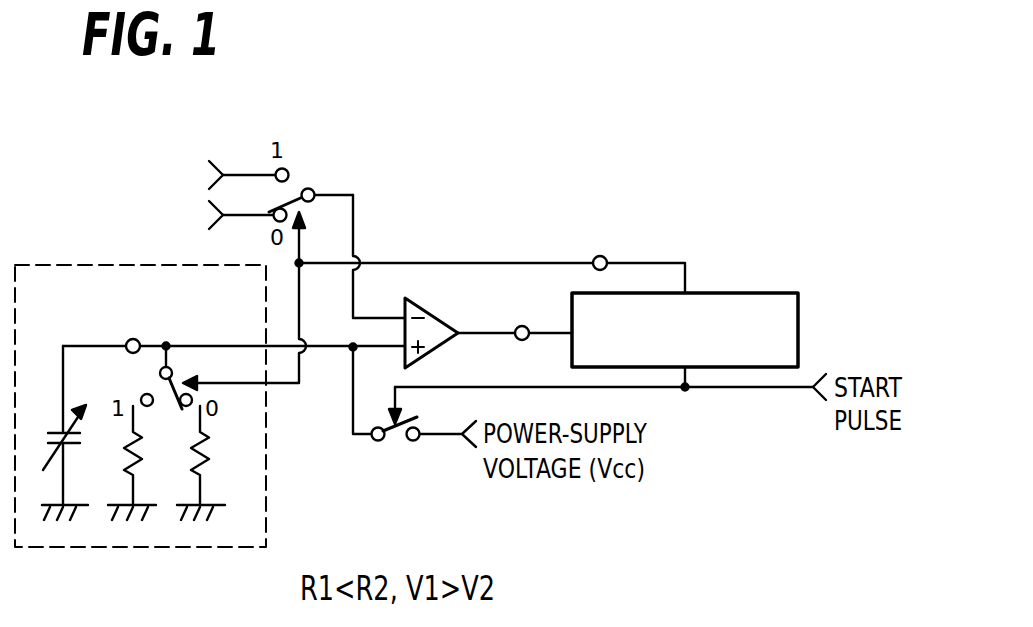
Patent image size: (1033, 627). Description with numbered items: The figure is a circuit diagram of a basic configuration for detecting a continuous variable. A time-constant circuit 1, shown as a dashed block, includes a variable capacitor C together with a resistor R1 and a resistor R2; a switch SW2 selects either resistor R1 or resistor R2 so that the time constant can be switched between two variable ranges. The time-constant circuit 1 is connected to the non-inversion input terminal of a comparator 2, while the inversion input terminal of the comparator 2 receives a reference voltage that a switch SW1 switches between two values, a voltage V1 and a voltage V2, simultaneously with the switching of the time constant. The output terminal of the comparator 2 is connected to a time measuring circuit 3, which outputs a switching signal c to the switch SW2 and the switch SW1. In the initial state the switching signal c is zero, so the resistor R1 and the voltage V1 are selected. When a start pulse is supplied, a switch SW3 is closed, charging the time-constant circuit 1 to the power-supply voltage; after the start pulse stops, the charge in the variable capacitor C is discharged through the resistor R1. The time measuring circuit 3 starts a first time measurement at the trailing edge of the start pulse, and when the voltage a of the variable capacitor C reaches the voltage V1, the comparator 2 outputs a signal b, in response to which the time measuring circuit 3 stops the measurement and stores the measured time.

The time-constant circuit 1 is at (57, 263).
The comparator 2 is at (438, 316).
The time measuring circuit 3 is at (742, 293).
The voltage of the variable capacitor a is at (133, 339).
The signal output from the comparator b is at (526, 326).
The switching signal c is at (603, 256).
The switch SW1 is at (303, 168).
The switch SW2 is at (148, 384).
The switch SW3 is at (398, 456).
The variable capacitor C is at (63, 433).
The resistor R1 is at (212, 463).
The resistor R2 is at (141, 463).
The reference voltage V1 is at (183, 217).
The reference voltage V2 is at (183, 177).